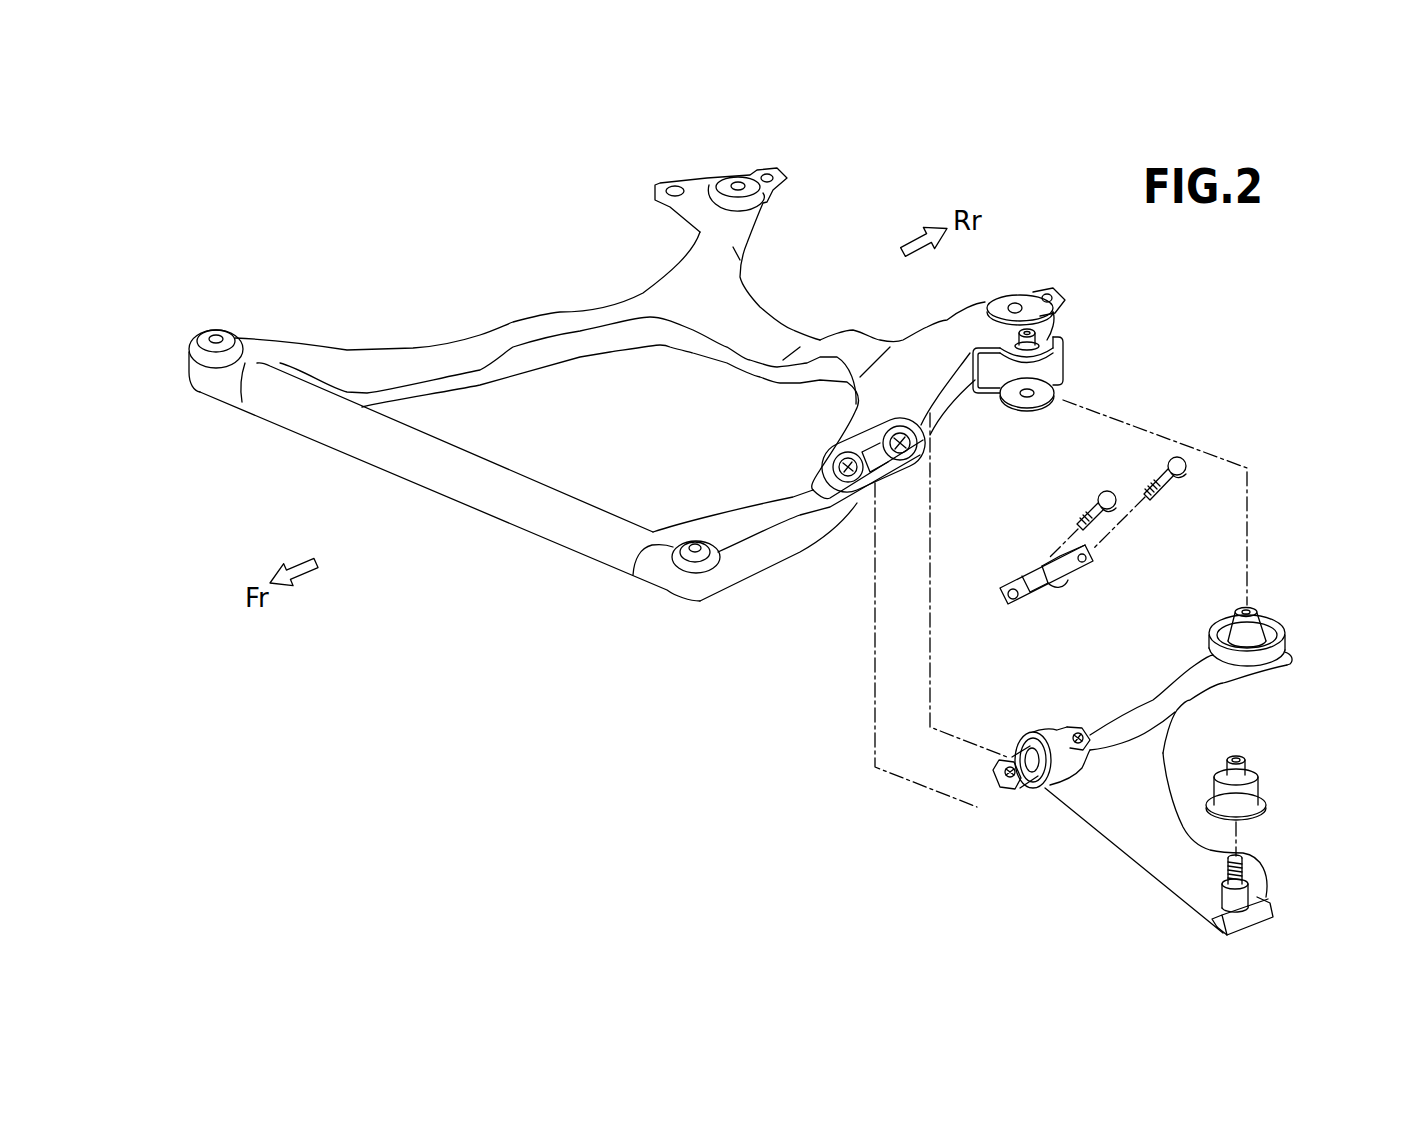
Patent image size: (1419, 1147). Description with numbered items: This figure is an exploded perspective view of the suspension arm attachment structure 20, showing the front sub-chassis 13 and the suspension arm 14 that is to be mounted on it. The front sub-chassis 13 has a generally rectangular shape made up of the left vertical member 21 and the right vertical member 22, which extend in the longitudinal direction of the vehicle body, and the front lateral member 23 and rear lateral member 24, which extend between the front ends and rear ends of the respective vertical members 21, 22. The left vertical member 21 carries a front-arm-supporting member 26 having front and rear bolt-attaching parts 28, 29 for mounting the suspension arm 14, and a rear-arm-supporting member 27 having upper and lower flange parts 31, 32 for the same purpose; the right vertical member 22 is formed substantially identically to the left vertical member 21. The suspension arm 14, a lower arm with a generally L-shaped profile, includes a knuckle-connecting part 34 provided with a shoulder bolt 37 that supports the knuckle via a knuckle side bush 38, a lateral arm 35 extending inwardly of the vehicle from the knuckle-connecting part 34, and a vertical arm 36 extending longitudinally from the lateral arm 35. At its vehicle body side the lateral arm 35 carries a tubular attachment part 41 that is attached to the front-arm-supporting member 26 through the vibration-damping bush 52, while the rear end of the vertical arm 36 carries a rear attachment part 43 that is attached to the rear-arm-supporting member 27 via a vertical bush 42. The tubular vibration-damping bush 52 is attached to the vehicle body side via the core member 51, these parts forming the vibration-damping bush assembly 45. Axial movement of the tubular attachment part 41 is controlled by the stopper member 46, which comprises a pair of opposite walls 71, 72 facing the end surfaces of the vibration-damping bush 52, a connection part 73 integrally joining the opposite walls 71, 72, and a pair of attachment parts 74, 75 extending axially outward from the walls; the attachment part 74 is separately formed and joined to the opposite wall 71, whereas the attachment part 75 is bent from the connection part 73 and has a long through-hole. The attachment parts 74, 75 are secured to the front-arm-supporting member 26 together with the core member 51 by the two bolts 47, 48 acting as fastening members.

The suspension arm attachment structure 20 is at (269, 172).
The front sub-chassis 13 is at (374, 306).
The suspension arm 14 is at (1159, 895).
The left vertical member 21 is at (722, 527).
The right vertical member 22 is at (453, 347).
The front lateral member 23 is at (540, 502).
The rear lateral member 24 is at (780, 342).
The front-arm-supporting member 26 is at (875, 416).
The rear-arm-supporting member 27 is at (1081, 363).
The front bolt-attaching part 28 is at (846, 485).
The rear bolt-attaching part 29 is at (899, 463).
The upper flange part 31 is at (1048, 336).
The lower flange part 32 is at (1045, 395).
The knuckle-connecting part 34 is at (1258, 905).
The lateral arm 35 is at (1150, 833).
The vertical arm 36 is at (1238, 686).
The shoulder bolt 37 is at (1240, 862).
The knuckle side bush 38 is at (1258, 783).
The tubular attachment part 41 is at (1038, 733).
The vertical bush 42 is at (1258, 614).
The rear attachment part 43 is at (1282, 627).
The vibration-damping bush assembly 45 is at (1060, 864).
The stopper member 46 is at (987, 604).
The bolt 47 is at (1185, 470).
The bolt 48 is at (1117, 502).
The core member 51 is at (1012, 793).
The vibration-damping bush 52 is at (1040, 790).
The opposite wall 71 is at (1068, 588).
The opposite wall 72 is at (1030, 592).
The connection part 73 is at (1036, 572).
The attachment part 74 is at (1062, 553).
The attachment part 75 is at (1003, 588).